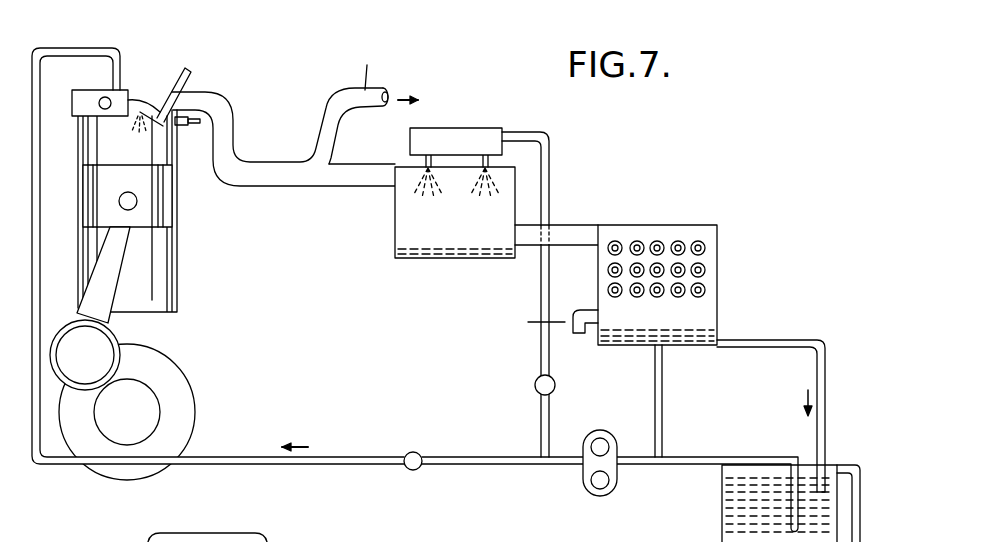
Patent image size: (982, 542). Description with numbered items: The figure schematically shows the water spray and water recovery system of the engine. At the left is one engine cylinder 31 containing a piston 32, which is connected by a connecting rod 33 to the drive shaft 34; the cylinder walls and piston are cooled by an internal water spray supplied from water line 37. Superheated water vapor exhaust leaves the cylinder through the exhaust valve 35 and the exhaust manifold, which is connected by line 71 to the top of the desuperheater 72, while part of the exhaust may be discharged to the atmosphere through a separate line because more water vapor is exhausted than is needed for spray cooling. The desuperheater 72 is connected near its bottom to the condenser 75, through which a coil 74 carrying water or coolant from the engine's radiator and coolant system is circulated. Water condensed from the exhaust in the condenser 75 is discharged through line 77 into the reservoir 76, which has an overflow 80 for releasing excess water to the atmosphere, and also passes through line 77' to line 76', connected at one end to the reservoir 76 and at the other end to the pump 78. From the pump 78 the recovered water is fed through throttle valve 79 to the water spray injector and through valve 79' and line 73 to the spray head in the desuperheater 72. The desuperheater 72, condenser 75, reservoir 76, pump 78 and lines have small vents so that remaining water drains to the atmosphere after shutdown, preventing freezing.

The engine cylinder 31 is at (168, 155).
The piston 32 is at (173, 212).
The connecting rod 33 is at (115, 263).
The drive shaft 34 is at (148, 410).
The exhaust valve 35 is at (159, 90).
The water line 37 is at (82, 48).
The line 71 is at (362, 195).
The desuperheater 72 is at (388, 236).
The line 73 is at (551, 172).
The coil 74 is at (705, 249).
The condenser 75 is at (705, 310).
The reservoir 76 is at (757, 503).
The line 76' is at (707, 480).
The line 77 is at (776, 400).
The line 77' is at (681, 401).
The pump 78 is at (598, 430).
The throttle valve 79 is at (414, 443).
The valve 79' is at (526, 383).
The overflow 80 is at (850, 465).